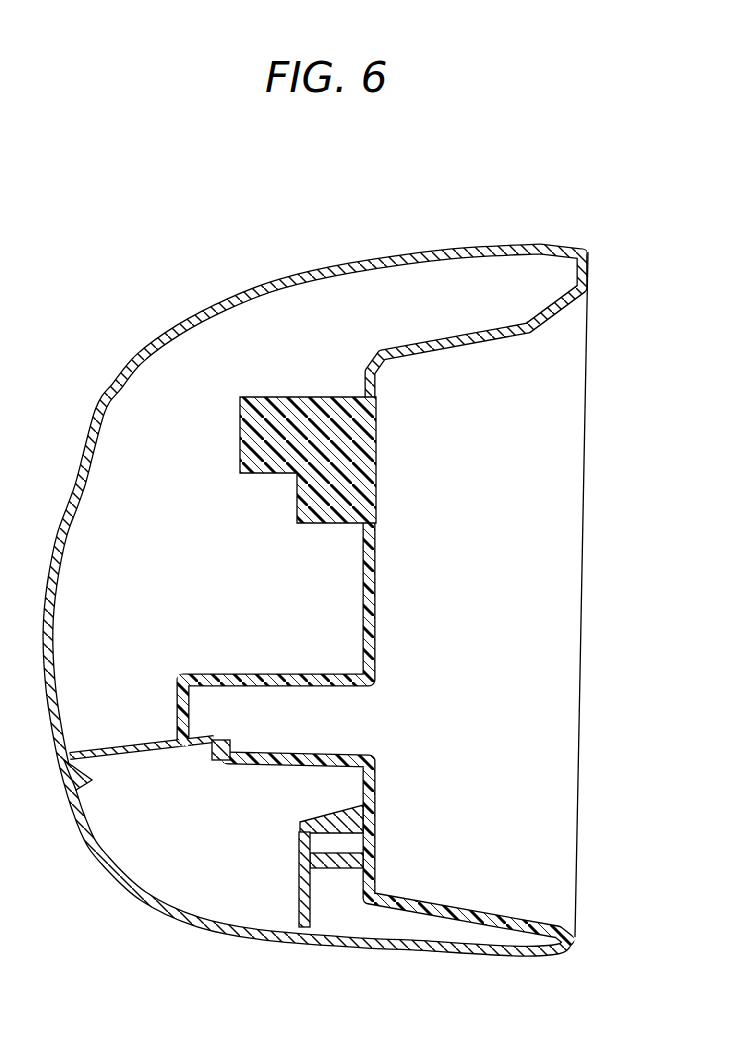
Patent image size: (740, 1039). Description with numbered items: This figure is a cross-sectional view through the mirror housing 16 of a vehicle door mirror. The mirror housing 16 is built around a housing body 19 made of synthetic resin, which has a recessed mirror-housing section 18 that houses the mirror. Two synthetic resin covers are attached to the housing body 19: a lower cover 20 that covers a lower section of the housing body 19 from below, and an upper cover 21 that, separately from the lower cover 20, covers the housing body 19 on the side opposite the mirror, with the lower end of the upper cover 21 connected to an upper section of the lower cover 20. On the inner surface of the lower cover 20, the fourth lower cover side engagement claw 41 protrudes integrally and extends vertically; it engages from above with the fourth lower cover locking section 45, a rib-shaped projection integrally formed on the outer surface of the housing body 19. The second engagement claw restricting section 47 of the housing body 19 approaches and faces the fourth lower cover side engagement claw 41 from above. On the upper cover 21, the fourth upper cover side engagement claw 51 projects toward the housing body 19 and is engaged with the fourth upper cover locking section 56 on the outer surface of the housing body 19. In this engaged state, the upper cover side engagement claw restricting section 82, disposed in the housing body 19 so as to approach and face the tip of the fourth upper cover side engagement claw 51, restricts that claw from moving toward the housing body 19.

The mirror housing 16 is at (190, 299).
The mirror-housing section 18 is at (505, 358).
The housing body 19 is at (377, 561).
The lower cover 20 is at (223, 938).
The upper cover 21 is at (252, 277).
The fourth lower cover side engagement claw 41 is at (300, 872).
The fourth lower cover locking section 45 is at (323, 870).
The second engagement claw restricting section 47 is at (300, 823).
The fourth upper cover side engagement claw 51 is at (140, 744).
The fourth upper cover locking section 56 is at (173, 728).
The upper cover side engagement claw restricting section 82 is at (212, 750).